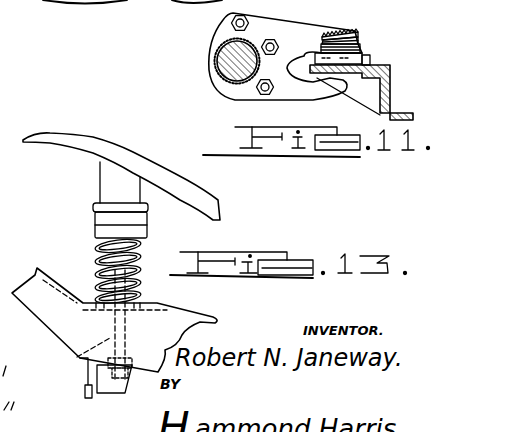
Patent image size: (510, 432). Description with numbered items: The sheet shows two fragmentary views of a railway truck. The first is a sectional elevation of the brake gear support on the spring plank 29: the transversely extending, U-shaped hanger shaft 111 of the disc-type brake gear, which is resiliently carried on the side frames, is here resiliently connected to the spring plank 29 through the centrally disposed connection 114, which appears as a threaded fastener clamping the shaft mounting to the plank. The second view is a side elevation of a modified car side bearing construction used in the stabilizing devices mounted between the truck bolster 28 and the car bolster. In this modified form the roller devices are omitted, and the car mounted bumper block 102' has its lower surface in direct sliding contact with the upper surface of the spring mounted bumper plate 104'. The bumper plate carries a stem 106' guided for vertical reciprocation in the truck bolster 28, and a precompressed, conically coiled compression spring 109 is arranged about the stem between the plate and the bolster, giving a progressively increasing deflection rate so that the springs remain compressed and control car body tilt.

In FIG. 11, the hanger shaft 111 is at (236, 53).
In FIG. 11, the centrally disposed connection 114 is at (360, 42).
In FIG. 11, the spring plank 29 is at (392, 79).
In FIG. 13, the car mounted bumper block 102' is at (81, 182).
In FIG. 13, the spring mounted bumper plate 104' is at (87, 220).
In FIG. 13, the conically coiled compression spring 109 is at (95, 258).
In FIG. 13, the truck bolster 28 is at (160, 302).
In FIG. 13, the support plate stem 106' is at (82, 378).